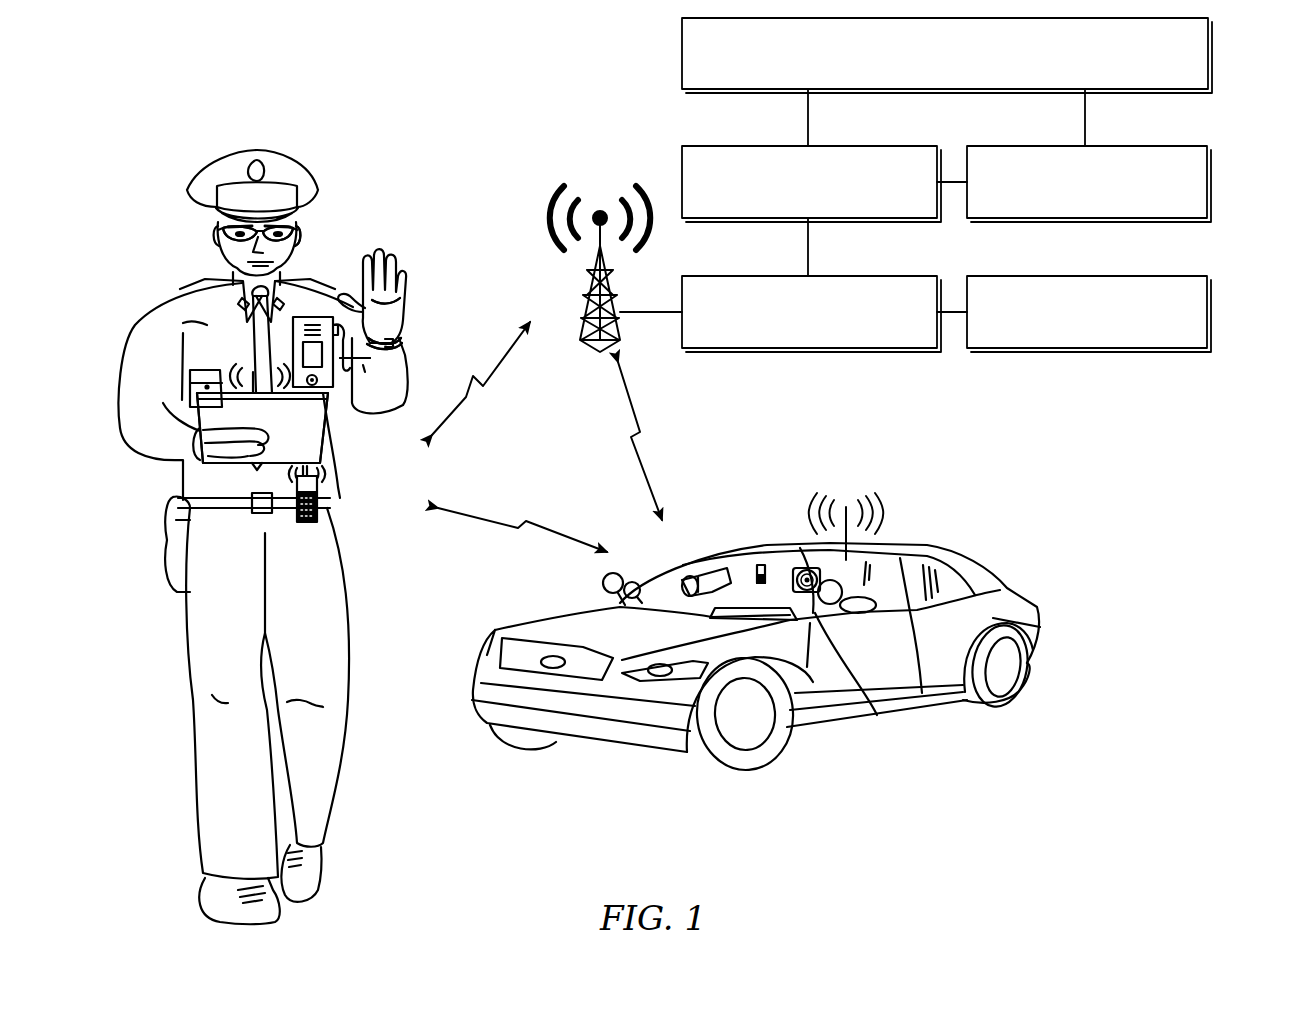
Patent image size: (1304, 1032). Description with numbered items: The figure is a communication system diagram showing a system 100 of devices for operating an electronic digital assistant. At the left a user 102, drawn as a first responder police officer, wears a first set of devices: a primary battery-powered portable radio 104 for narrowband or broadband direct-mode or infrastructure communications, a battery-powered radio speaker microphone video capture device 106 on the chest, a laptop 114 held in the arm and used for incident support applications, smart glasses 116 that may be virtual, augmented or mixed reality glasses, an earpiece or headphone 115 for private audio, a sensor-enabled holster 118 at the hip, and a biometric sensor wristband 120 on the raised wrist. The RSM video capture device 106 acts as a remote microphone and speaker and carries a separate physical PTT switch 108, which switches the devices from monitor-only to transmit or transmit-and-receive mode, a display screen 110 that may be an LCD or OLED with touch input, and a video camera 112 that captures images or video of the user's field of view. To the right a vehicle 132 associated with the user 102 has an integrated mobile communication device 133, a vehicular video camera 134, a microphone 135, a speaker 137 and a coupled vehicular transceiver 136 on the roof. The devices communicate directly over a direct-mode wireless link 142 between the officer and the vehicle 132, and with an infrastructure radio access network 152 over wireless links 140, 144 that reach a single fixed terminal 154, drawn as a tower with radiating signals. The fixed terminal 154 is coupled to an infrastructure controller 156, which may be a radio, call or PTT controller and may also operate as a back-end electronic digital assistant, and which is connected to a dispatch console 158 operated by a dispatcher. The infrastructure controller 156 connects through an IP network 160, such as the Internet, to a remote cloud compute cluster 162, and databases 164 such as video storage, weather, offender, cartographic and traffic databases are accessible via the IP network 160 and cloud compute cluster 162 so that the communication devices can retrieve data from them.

The system 100 is at (46, 158).
The user 102 is at (263, 537).
The portable radio 104 is at (349, 489).
The radio speaker microphone (RSM) video capture device 106 is at (318, 310).
The PTT switch 108 is at (408, 293).
The display screen 110 is at (399, 353).
The video camera 112 is at (382, 381).
The laptop 114 is at (219, 444).
The earpiece or headphone 115 is at (355, 215).
The smart glasses 116 is at (212, 225).
The sensor-enabled holster 118 is at (142, 544).
The biometric sensor wristband 120 is at (422, 328).
The vehicle 132 is at (763, 635).
The mobile communication device 133 is at (855, 686).
The vehicular video camera 134 is at (699, 558).
The microphone 135 is at (746, 536).
The vehicular transceiver 136 is at (874, 526).
The speaker 137 is at (783, 514).
The wireless link 140 is at (487, 378).
The direct-mode wireless link 142 is at (522, 519).
The wireless link 144 is at (658, 441).
The infrastructure radio access network (RAN) 152 is at (560, 234).
The fixed terminal 154 is at (600, 281).
The infrastructure controller 156 is at (811, 295).
The dispatch console 158 is at (1089, 295).
The IP network 160 is at (811, 165).
The cloud compute cluster 162 is at (1089, 165).
The database(s) 164 is at (982, 55).